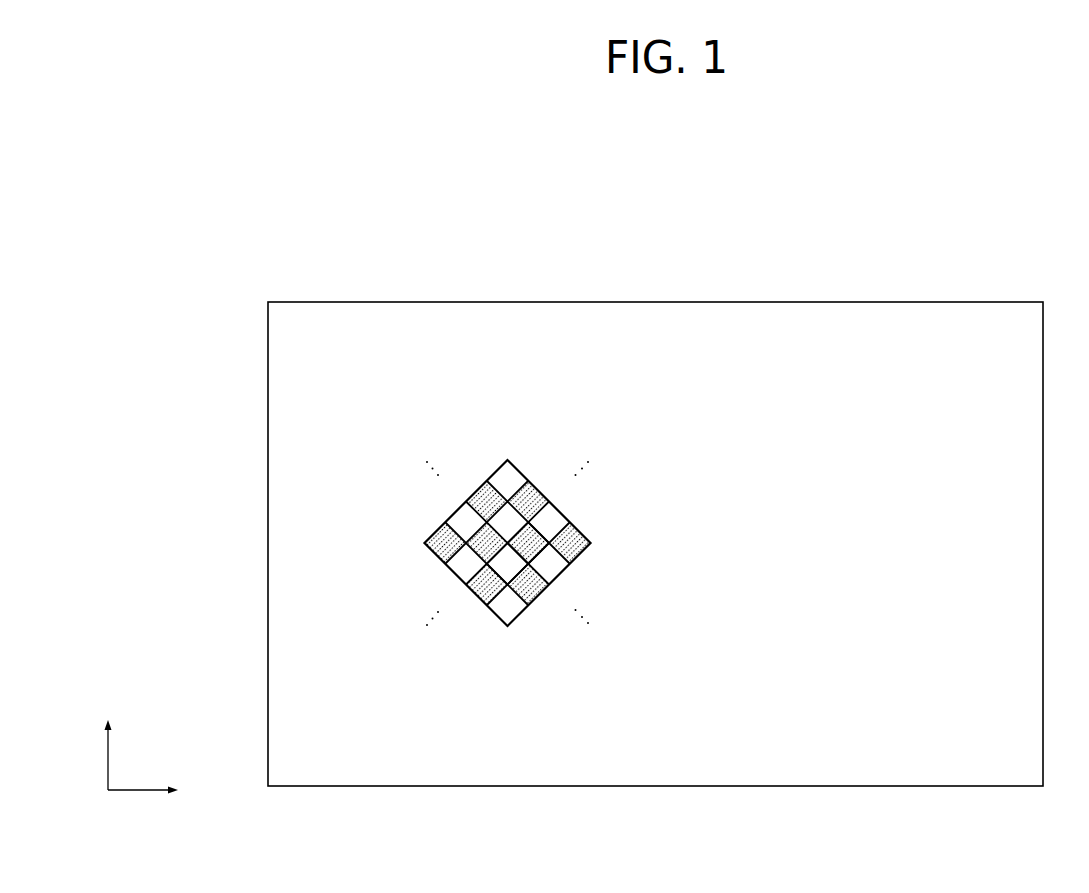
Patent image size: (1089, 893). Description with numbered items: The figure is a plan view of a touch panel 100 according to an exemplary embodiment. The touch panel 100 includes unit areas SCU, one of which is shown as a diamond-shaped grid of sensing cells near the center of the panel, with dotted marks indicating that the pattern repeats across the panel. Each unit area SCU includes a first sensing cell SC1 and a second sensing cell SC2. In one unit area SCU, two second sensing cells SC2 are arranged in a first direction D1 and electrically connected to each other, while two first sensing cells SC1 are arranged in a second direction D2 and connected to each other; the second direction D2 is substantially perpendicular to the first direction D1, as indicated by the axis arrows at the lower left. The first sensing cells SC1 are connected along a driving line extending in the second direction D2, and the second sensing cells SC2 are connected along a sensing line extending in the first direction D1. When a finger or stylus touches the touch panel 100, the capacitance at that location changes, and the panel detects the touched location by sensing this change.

The touch panel 100 is at (889, 250).
The unit area SCU is at (492, 575).
The first sensing cell SC1 is at (508, 569).
The second sensing cell SC2 is at (530, 556).
The first direction D1 is at (157, 792).
The second direction D2 is at (108, 741).